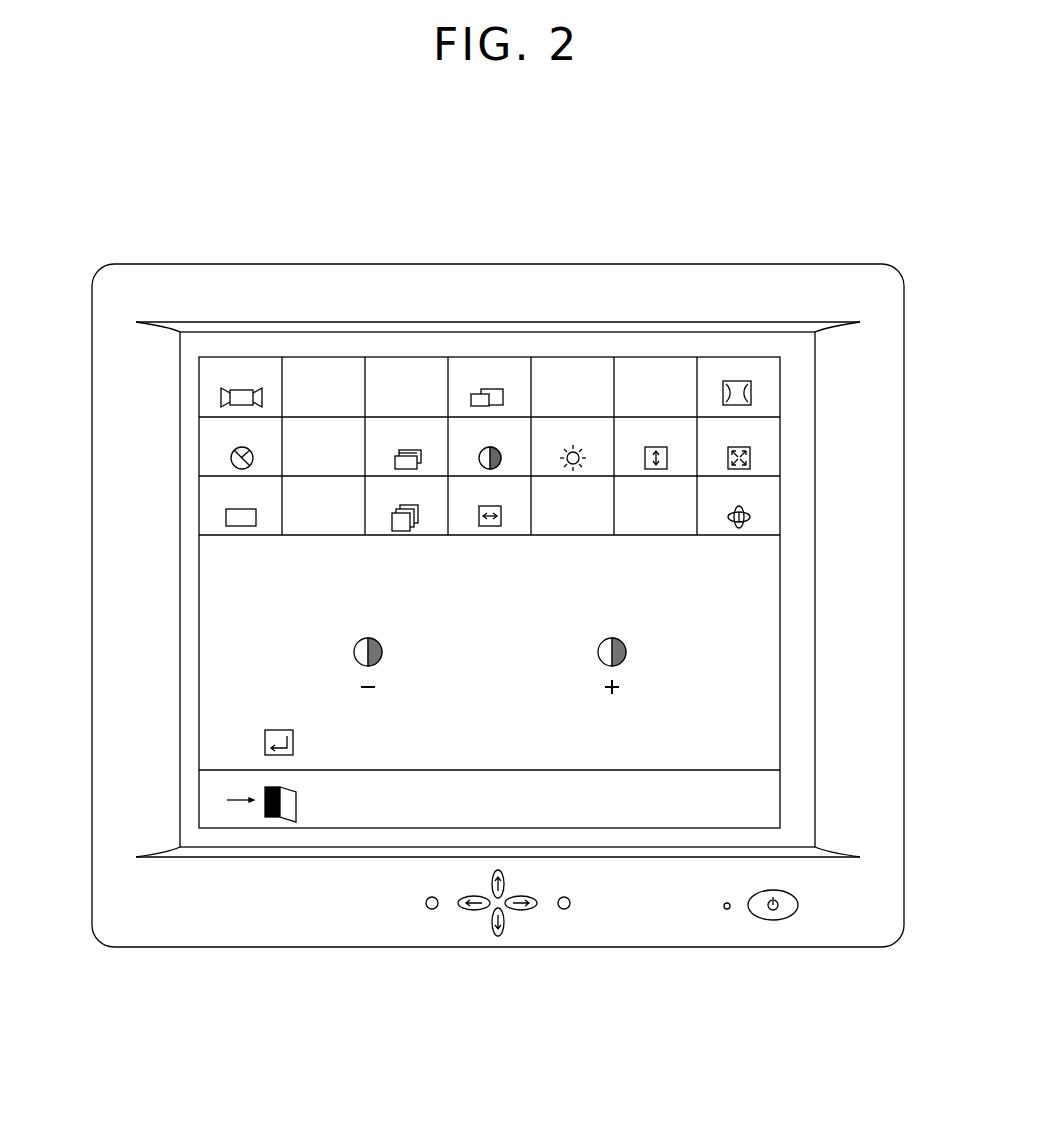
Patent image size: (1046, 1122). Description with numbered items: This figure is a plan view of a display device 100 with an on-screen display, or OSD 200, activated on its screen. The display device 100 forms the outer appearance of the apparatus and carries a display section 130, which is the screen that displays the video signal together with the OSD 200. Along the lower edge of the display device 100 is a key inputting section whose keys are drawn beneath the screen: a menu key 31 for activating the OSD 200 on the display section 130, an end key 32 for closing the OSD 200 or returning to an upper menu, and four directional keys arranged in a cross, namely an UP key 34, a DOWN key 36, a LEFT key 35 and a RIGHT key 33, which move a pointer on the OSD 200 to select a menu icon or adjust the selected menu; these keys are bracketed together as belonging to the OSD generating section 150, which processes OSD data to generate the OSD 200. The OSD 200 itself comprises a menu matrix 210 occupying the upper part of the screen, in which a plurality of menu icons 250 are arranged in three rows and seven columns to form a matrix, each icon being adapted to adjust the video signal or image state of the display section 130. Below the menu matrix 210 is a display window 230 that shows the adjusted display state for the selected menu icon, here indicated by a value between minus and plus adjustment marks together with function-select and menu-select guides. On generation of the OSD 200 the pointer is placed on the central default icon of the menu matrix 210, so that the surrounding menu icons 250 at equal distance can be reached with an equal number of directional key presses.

The display device 100 is at (303, 252).
The display section 130 is at (678, 840).
The OSD 200 is at (740, 352).
The menu matrix 210 is at (780, 517).
The menu icons 250 is at (755, 392).
The display window 230 is at (780, 658).
The OSD generating section 150 is at (497, 919).
The menu key 31 is at (563, 893).
The end key 32 is at (429, 893).
The RIGHT key 33 is at (535, 954).
The UP key 34 is at (498, 869).
The LEFT key 35 is at (468, 910).
The DOWN key 36 is at (498, 937).